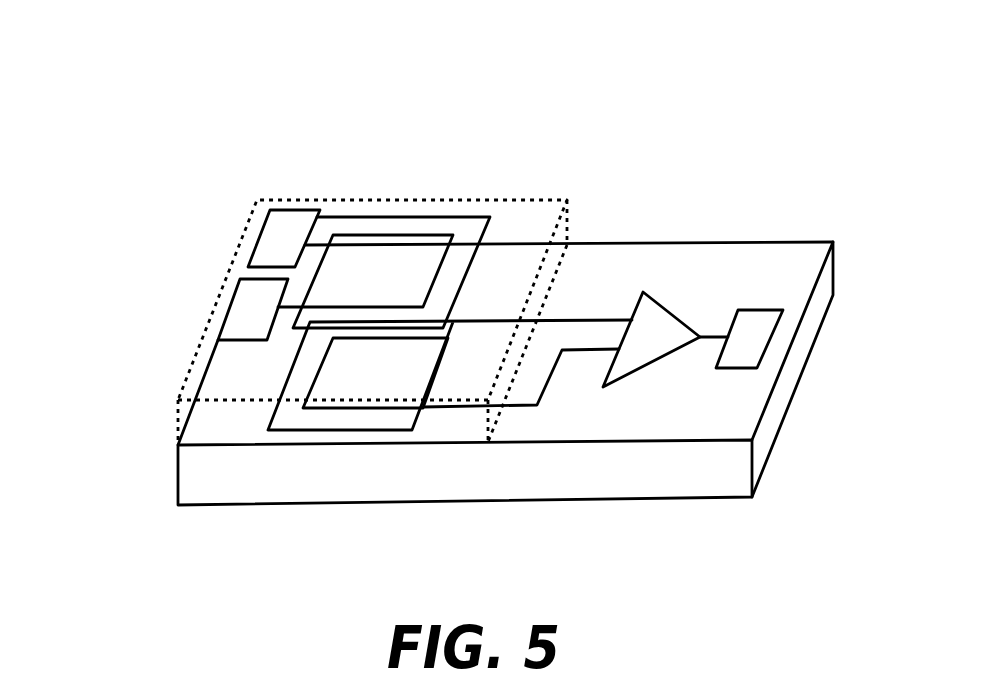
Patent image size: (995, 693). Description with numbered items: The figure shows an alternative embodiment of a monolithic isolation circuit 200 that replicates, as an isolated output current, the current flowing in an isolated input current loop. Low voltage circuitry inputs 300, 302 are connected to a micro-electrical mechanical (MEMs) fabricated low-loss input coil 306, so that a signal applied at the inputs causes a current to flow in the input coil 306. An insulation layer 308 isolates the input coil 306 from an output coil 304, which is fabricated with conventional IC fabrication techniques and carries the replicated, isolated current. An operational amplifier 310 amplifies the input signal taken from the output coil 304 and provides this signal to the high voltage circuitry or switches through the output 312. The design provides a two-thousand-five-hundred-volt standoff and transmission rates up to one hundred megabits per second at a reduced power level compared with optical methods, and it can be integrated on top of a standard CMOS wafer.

The monolithic isolation circuit 200 is at (177, 122).
The low voltage circuitry input 300 is at (277, 237).
The low voltage circuitry input 302 is at (245, 305).
The output coil 304 is at (322, 435).
The input coil 306 is at (387, 207).
The insulation layer 308 is at (530, 228).
The operational amplifier 310 is at (668, 308).
The output 312 is at (750, 342).